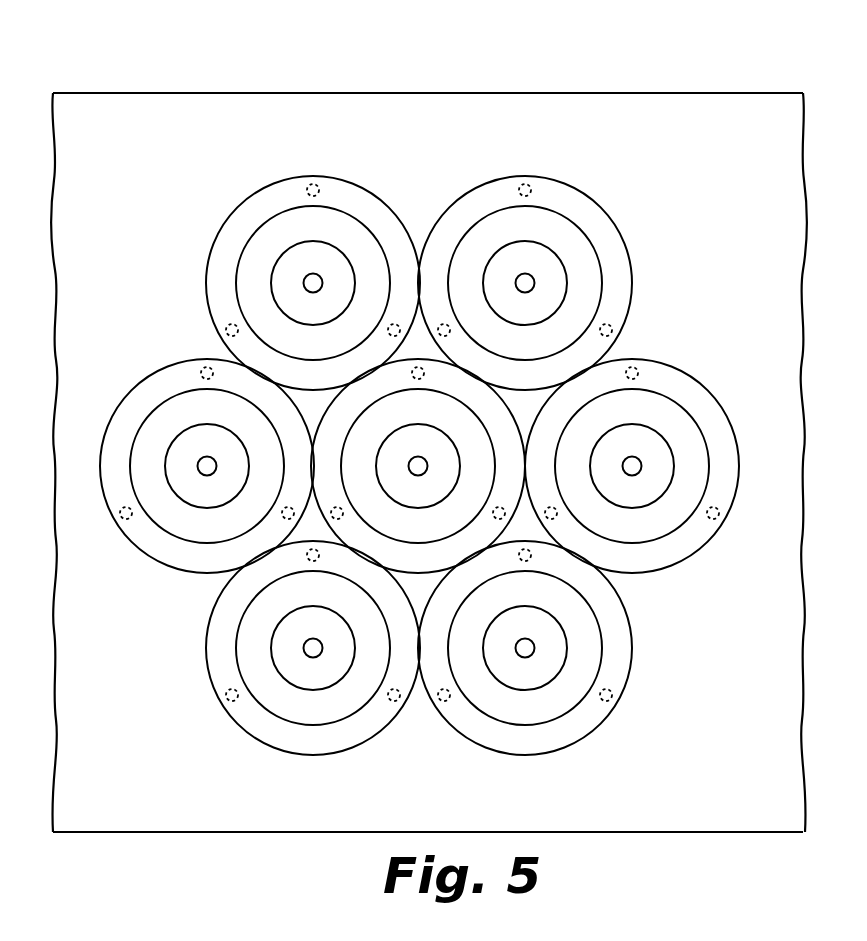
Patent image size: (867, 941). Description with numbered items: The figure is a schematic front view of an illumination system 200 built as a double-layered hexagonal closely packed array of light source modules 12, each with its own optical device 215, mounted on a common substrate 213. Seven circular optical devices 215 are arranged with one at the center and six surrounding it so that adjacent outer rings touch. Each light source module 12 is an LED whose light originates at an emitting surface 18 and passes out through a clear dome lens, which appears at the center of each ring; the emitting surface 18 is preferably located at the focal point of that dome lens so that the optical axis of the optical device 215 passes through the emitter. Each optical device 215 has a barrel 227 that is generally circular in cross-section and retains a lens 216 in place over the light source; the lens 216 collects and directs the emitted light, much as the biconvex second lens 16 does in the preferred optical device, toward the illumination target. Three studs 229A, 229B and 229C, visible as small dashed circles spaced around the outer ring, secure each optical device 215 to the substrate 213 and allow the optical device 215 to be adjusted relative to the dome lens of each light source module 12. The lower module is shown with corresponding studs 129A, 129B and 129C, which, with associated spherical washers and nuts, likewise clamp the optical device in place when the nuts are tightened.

The illumination system 200 is at (650, 60).
The substrate 213 is at (165, 136).
The second lens 16 is at (235, 258).
The emitting surface 18 is at (304, 284).
The optical device 215 is at (585, 182).
The barrel 227 is at (588, 208).
The lens 216 is at (580, 247).
The light source module 12 is at (562, 287).
The stud 229A is at (527, 185).
The stud 229B is at (612, 331).
The stud 229C is at (443, 325).
The stud 129A is at (610, 698).
The stud 129B is at (527, 560).
The stud 129C is at (443, 698).